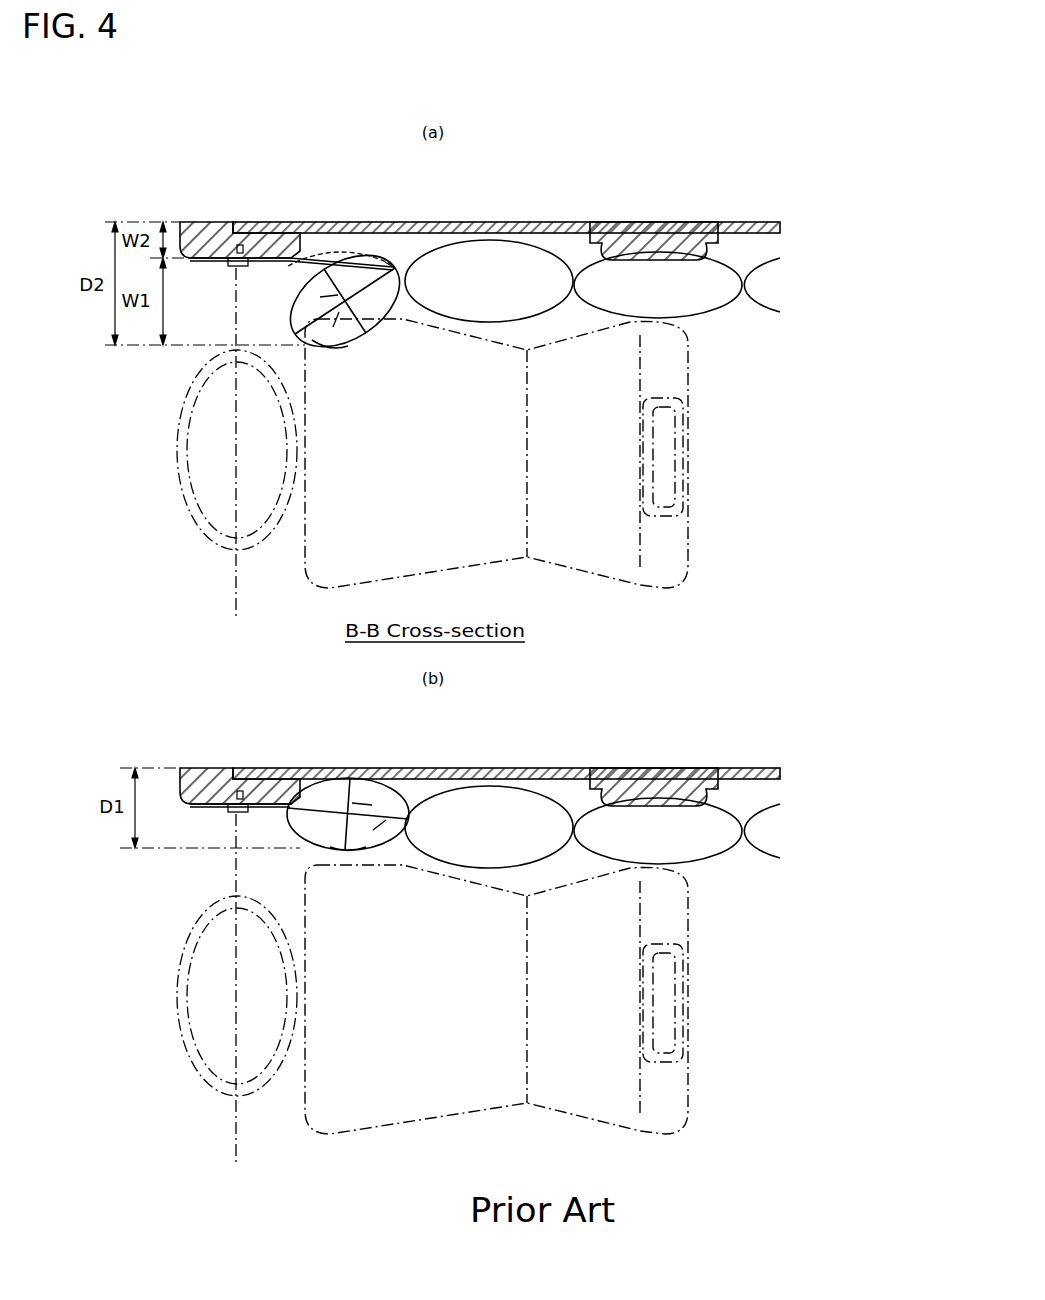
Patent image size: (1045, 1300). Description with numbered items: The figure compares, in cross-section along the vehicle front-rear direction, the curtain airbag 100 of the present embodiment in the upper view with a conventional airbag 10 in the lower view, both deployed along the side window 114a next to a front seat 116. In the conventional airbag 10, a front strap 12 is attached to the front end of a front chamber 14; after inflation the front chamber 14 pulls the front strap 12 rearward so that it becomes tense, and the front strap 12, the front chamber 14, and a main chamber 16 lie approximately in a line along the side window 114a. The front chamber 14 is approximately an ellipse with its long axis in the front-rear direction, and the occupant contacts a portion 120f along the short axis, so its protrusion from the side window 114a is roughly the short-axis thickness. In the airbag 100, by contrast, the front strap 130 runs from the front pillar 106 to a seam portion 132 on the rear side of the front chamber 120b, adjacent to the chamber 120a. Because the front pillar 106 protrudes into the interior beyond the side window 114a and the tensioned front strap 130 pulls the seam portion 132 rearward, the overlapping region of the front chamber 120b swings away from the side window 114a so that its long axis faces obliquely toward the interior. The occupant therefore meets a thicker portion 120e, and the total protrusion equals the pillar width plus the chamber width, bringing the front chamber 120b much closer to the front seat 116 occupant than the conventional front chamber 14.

The front pillar 106 is at (218, 224).
The side window 114a is at (545, 222).
The seam portion 132 is at (393, 266).
The front strap 130 is at (290, 268).
The front chamber 120b is at (352, 349).
The portion of the front chamber 120e is at (333, 356).
The chamber 120a is at (487, 302).
The airbag 100 is at (728, 338).
The front seat 116 is at (683, 535).
The front strap 12 is at (276, 808).
The front chamber 14 is at (357, 849).
The portion 120f is at (347, 852).
The main chamber 16 is at (487, 847).
The airbag 10 is at (727, 885).